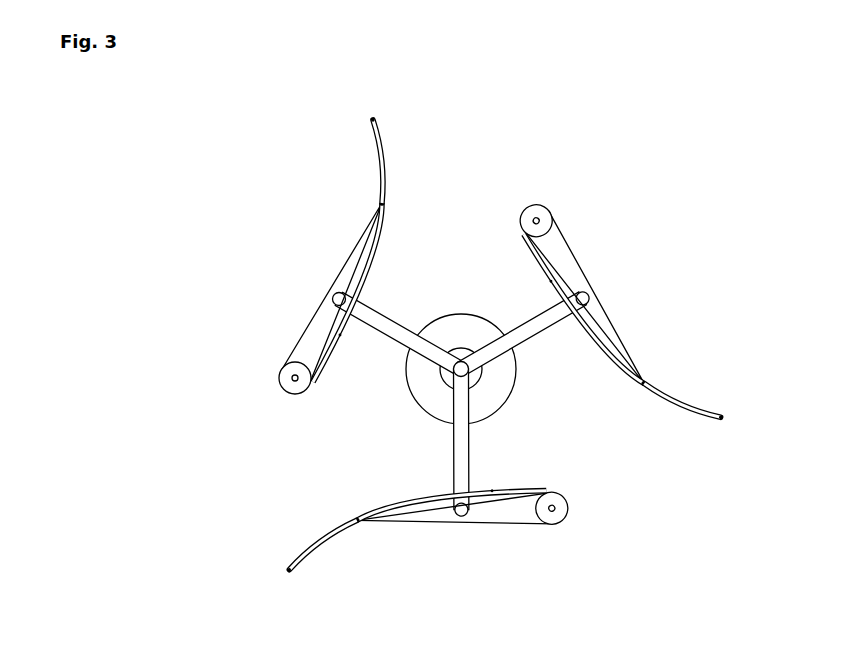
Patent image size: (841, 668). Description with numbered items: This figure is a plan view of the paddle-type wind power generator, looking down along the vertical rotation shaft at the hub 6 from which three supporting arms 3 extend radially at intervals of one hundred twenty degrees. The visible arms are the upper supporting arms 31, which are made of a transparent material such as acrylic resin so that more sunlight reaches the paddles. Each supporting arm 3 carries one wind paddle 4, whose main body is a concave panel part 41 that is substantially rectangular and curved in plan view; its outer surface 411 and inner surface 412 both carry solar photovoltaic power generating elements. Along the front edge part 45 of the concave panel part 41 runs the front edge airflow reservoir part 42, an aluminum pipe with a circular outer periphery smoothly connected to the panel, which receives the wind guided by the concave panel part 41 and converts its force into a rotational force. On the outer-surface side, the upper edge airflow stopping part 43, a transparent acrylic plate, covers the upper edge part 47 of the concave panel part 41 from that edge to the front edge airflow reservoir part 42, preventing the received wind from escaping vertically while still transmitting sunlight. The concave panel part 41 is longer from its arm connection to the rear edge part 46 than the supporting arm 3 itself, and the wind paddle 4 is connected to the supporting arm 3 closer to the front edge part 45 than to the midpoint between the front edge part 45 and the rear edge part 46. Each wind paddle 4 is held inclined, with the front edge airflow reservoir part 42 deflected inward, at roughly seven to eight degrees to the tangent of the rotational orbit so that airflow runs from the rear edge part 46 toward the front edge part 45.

The supporting arm 3 is at (462, 388).
The upper supporting arm 31 is at (403, 322).
The wind paddle 4 is at (468, 373).
The concave panel part 41 is at (497, 360).
The outer surface 411 is at (378, 172).
The inner surface 412 is at (383, 230).
The front edge airflow reservoir part 42 is at (279, 379).
The upper edge airflow stopping part 43 is at (300, 332).
The front edge part 45 is at (312, 390).
The rear edge part 46 is at (376, 120).
The upper edge part 47 is at (338, 350).
The hub 6 is at (417, 407).